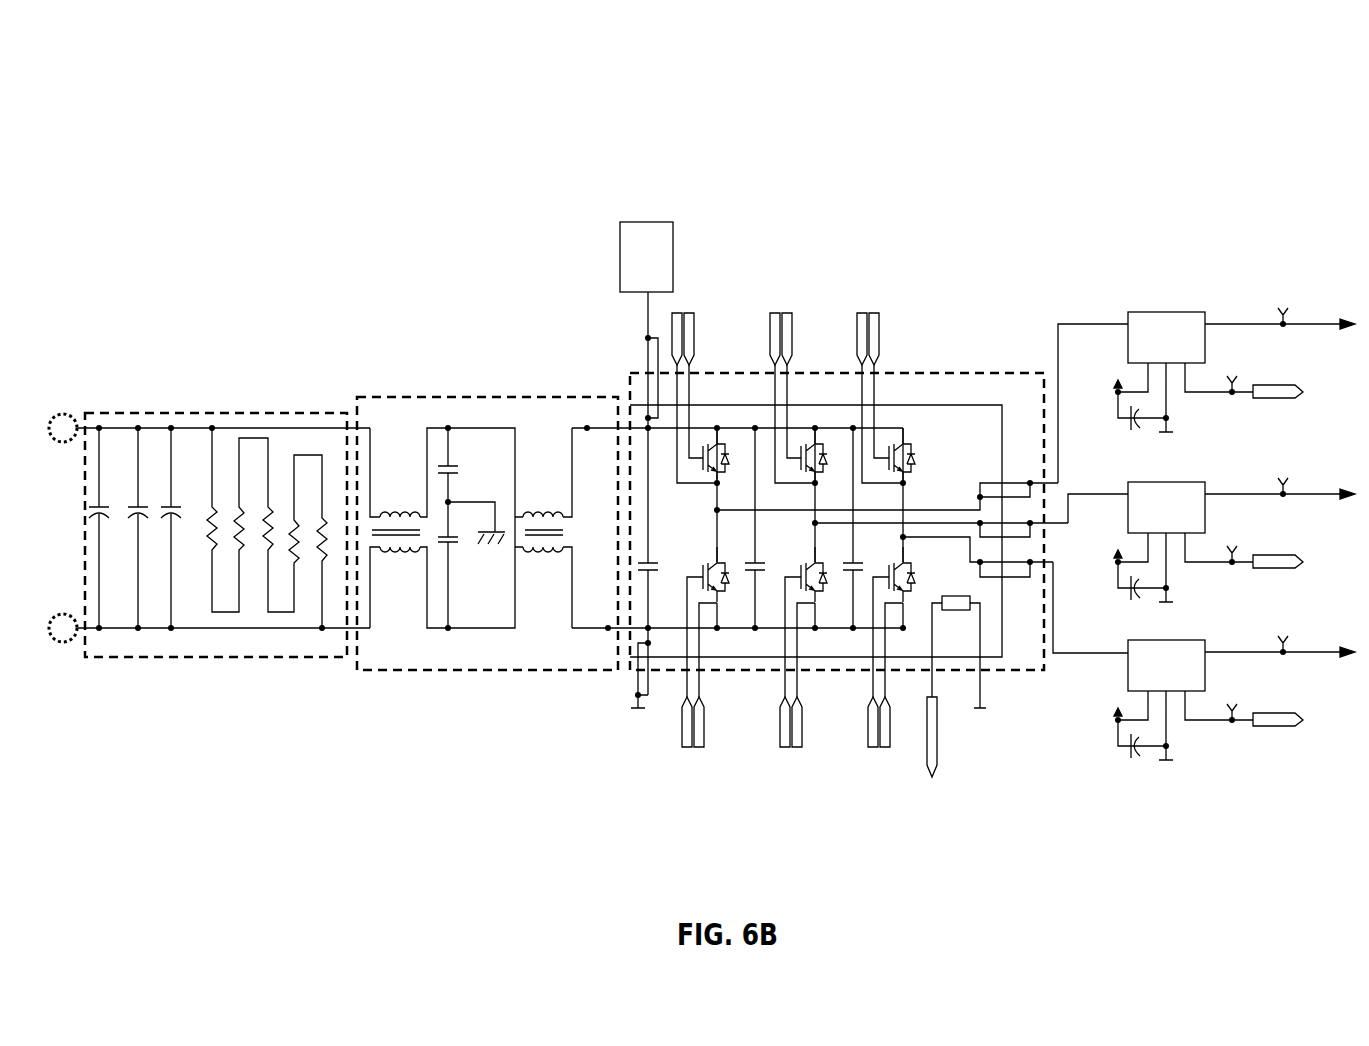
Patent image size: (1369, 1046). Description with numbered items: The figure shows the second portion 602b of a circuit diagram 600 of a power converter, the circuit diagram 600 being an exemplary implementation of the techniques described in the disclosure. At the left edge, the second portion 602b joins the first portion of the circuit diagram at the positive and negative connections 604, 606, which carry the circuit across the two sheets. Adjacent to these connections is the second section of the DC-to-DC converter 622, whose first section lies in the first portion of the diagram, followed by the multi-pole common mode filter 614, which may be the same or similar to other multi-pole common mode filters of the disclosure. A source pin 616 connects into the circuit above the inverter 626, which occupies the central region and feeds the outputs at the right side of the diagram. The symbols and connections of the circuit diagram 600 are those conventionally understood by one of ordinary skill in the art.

The circuit diagram 600 is at (998, 106).
The second portion 602b is at (1137, 131).
The positive connection 604 is at (73, 412).
The negative connection 606 is at (66, 648).
The multi-pole common mode filter 614 is at (455, 396).
The source pin 616 is at (662, 269).
The DC-to-DC converter 622 is at (207, 412).
The inverter 626 is at (992, 372).